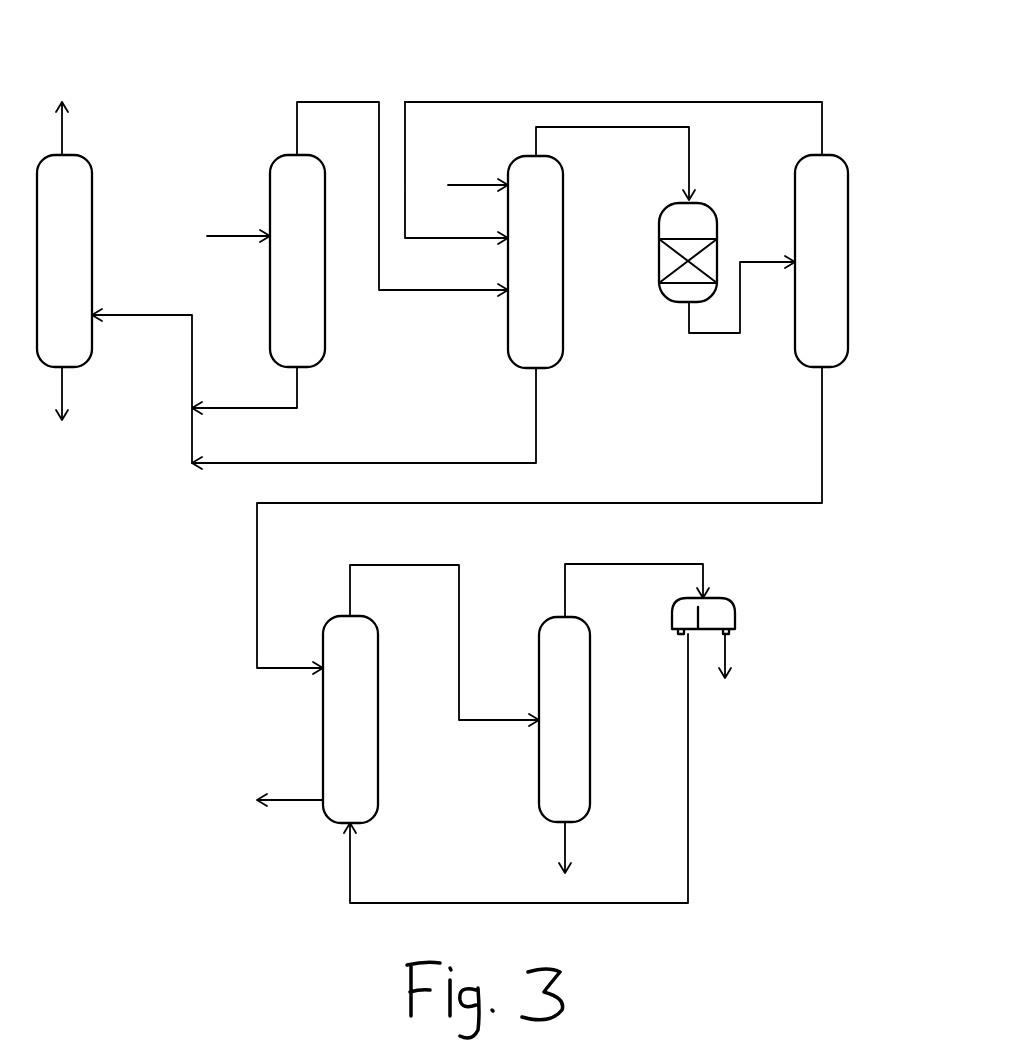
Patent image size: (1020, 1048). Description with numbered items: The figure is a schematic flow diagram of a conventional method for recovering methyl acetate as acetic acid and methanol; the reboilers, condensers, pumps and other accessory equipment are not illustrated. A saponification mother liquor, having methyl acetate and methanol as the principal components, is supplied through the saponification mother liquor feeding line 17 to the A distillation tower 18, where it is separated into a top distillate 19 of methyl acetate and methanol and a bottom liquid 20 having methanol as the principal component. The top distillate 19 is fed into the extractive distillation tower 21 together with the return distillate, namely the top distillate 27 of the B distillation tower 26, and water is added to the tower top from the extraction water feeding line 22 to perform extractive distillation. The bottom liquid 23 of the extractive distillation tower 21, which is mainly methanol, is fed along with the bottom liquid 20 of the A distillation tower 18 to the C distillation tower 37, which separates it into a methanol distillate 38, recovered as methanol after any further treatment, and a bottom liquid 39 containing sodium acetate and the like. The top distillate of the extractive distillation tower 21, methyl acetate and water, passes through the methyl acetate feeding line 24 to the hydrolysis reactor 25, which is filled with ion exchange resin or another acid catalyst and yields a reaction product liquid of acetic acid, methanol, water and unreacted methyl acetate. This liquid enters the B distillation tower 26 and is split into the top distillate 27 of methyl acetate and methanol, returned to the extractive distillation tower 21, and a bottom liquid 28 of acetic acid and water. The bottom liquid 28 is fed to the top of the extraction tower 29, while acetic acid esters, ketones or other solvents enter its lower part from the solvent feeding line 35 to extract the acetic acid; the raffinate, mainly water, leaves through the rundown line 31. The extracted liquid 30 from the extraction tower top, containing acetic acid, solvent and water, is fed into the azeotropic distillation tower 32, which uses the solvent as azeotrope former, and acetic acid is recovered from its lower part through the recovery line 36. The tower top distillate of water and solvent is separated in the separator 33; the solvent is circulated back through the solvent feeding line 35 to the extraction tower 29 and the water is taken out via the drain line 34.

The saponification mother liquor feeding line 17 is at (228, 232).
The A distillation tower 18 is at (310, 326).
The top distillate 19 is at (297, 120).
The bottom liquid 20 is at (297, 390).
The extractive distillation tower 21 is at (550, 326).
The extraction water feeding line 22 is at (467, 182).
The bottom liquid 23 is at (455, 462).
The methyl acetate feeding line 24 is at (689, 128).
The hydrolysis reactor 25 is at (698, 222).
The B distillation tower 26 is at (838, 232).
The top distillate 27 is at (822, 110).
The bottom liquid 28 is at (695, 502).
The extraction tower 29 is at (368, 692).
The extracted liquid 30 is at (459, 578).
The rundown line 31 is at (280, 798).
The azeotropic distillation tower 32 is at (580, 692).
The separator 33 is at (725, 608).
The drain line 34 is at (725, 655).
The solvent feeding line 35 is at (440, 902).
The recovery line 36 is at (565, 850).
The C distillation tower 37 is at (80, 231).
The methanol distillate 38 is at (62, 128).
The bottom liquid 39 is at (62, 393).